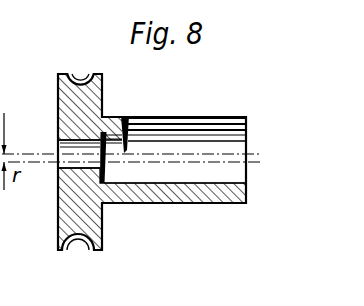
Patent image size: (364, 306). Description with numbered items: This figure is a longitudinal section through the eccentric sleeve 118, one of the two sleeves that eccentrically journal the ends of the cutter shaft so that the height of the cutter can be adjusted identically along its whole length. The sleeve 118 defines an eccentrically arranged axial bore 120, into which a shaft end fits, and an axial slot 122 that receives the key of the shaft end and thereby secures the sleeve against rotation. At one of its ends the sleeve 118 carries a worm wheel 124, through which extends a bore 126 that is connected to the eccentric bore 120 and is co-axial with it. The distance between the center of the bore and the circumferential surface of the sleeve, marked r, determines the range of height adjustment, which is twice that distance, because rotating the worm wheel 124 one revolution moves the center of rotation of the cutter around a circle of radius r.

The eccentric sleeve 118 is at (147, 161).
The eccentric bore 120 is at (216, 184).
The axial slot 122 is at (184, 120).
The worm wheel 124 is at (97, 100).
The bore 126 is at (58, 146).